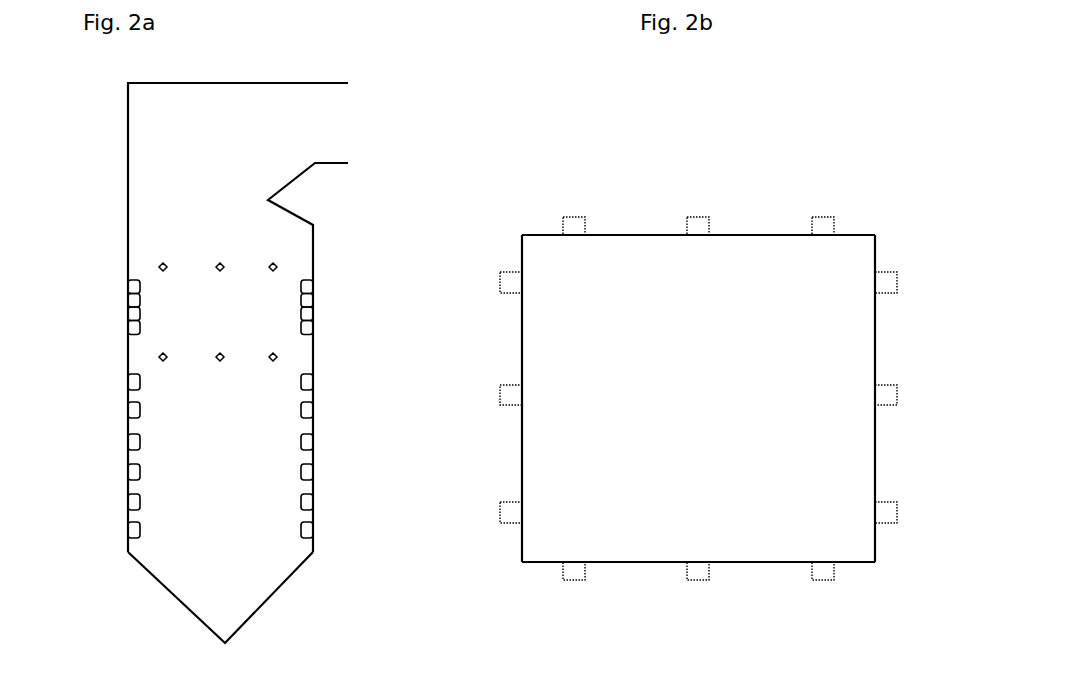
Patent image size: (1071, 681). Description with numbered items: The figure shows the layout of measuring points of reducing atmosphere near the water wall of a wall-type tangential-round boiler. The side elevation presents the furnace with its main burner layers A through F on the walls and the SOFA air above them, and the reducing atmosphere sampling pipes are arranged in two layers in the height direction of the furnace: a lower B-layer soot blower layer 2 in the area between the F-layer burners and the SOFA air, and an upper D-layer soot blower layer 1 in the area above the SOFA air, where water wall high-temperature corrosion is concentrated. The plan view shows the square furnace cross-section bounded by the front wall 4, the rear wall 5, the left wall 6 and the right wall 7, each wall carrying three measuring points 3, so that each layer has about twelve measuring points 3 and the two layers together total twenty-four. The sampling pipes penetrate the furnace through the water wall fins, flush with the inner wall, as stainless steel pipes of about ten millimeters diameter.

In FIG. 2A, the D-layer soot blower layer 1 is at (128, 275).
In FIG. 2A, the B-layer soot blower layer 2 is at (126, 362).
In FIG. 2B, the measuring points 3 is at (823, 222).
In FIG. 2B, the front wall 4 is at (765, 560).
In FIG. 2B, the rear wall 5 is at (645, 235).
In FIG. 2B, the left wall 6 is at (522, 353).
In FIG. 2B, the right wall 7 is at (873, 325).